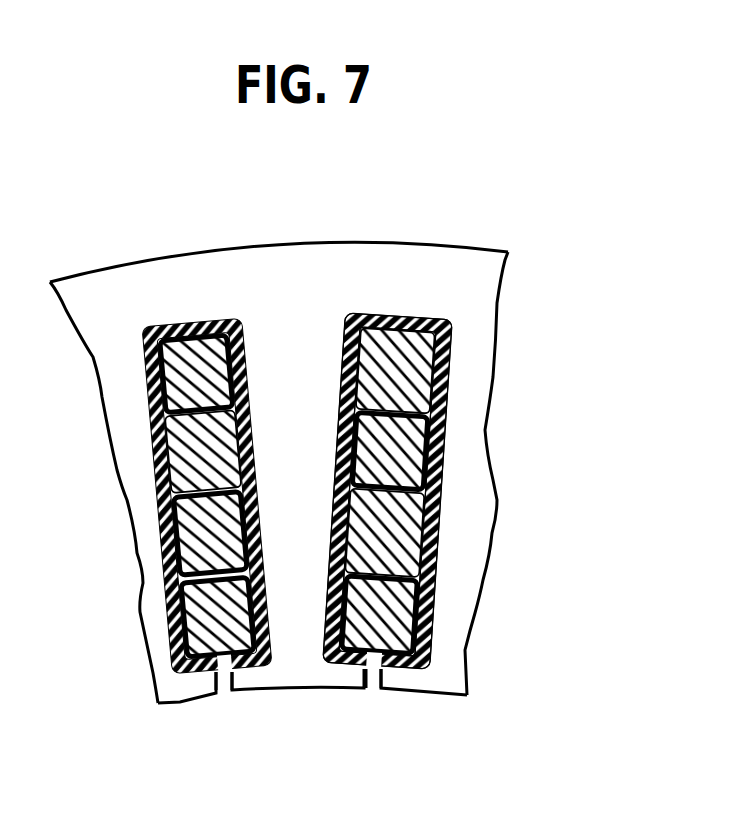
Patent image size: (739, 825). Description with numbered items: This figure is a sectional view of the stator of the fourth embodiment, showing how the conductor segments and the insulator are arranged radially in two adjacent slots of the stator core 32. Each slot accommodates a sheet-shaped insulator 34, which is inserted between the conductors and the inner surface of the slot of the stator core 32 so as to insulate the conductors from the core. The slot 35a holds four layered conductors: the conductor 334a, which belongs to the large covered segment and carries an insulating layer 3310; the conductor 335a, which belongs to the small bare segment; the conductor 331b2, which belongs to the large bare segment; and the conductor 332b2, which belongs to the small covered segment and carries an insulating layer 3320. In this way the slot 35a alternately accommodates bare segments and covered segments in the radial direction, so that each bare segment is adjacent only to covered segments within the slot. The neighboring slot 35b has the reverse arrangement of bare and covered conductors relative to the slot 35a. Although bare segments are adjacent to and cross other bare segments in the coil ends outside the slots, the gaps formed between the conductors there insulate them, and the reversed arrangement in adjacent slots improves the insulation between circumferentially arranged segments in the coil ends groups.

The stator core 32 is at (278, 272).
The sheet-shaped insulator 34 is at (455, 326).
The conductor 331b2 is at (437, 378).
The conductor 332b2 is at (428, 430).
The insulating layer 3320 is at (438, 467).
The conductor 335a is at (390, 543).
The conductor 334a is at (398, 613).
The insulating layer 3310 is at (424, 650).
The slot 35b is at (222, 677).
The slot 35a is at (372, 676).